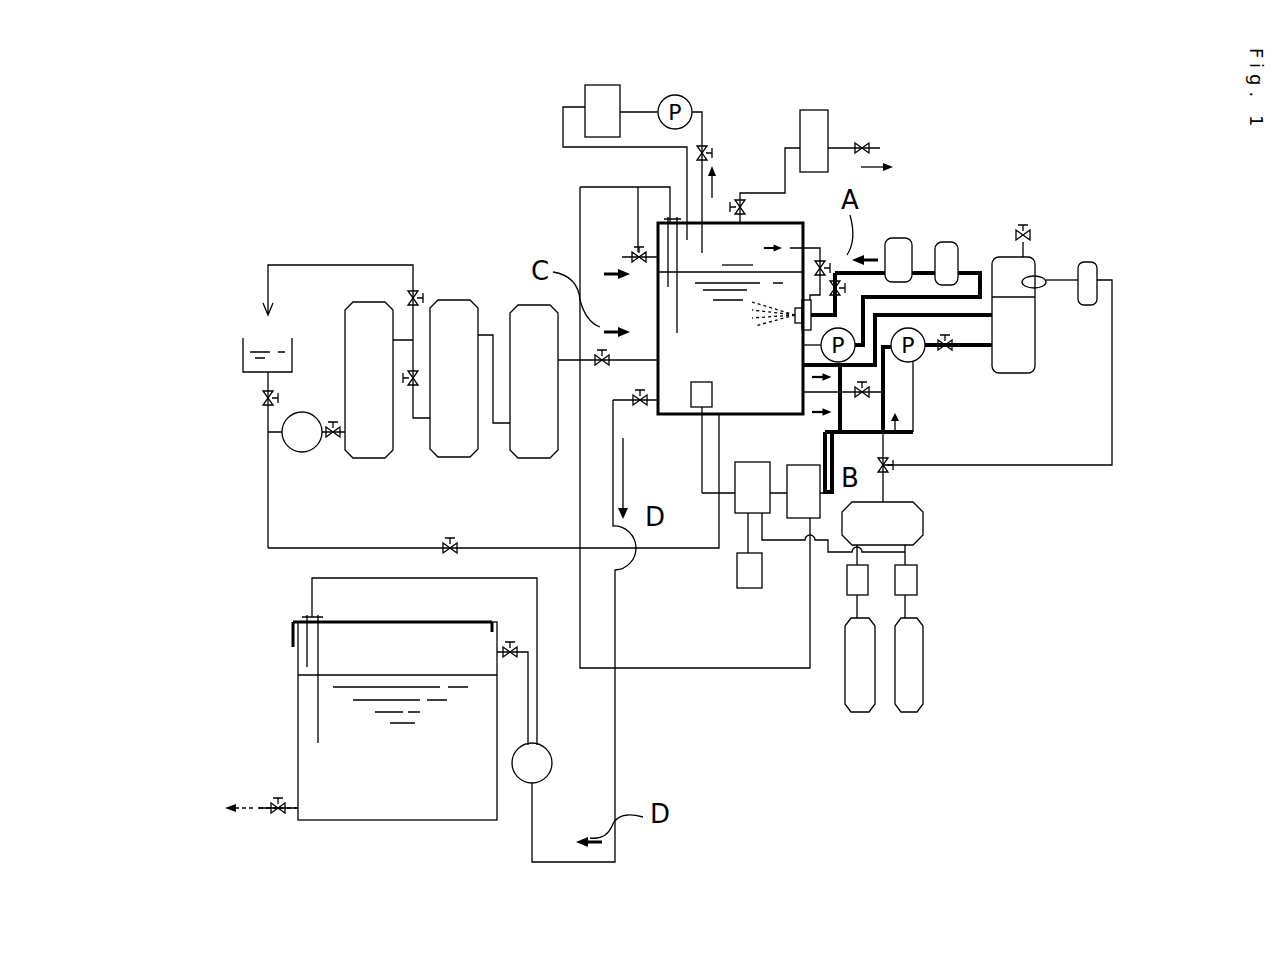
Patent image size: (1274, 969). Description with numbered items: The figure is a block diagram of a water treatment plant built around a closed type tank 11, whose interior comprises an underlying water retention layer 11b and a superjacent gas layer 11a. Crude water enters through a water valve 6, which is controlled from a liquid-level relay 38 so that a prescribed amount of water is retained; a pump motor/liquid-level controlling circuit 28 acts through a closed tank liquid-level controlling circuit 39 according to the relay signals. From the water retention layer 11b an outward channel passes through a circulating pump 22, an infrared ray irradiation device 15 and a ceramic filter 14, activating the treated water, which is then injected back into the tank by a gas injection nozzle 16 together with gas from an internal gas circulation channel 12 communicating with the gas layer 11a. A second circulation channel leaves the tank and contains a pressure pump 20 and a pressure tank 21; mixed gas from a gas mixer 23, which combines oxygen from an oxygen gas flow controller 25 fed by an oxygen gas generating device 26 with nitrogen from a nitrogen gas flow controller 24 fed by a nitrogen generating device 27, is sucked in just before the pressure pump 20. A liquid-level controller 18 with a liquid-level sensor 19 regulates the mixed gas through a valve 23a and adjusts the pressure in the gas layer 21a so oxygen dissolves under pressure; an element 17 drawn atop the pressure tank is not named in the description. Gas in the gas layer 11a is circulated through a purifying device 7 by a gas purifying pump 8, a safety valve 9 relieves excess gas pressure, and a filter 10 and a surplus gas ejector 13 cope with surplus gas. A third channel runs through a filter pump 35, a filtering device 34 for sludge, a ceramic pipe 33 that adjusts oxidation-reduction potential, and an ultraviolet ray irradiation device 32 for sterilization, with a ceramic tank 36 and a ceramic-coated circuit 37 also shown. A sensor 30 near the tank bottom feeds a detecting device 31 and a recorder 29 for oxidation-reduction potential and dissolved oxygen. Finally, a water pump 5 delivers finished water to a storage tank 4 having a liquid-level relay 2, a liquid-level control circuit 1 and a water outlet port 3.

The liquid-level control circuit 1 is at (418, 580).
The liquid-level relay 2 is at (308, 612).
The water outlet port 3 is at (267, 812).
The storage tank 4 is at (438, 820).
The water pump 5 is at (550, 775).
The water valve 6 is at (637, 255).
The purifying device 7 is at (597, 85).
The gas purifying pump 8 is at (675, 95).
The safety valve 9 is at (740, 200).
The filter 10 is at (812, 110).
The closed type tank 11 is at (690, 420).
The gas layer 11a is at (746, 249).
The water retention layer 11b is at (604, 626).
The internal gas circulation channel 12 is at (819, 260).
The surplus gas ejector 13 is at (862, 142).
The ceramic filter 14 is at (893, 240).
The infrared ray irradiation device 15 is at (945, 243).
The gas injection nozzle 16 is at (797, 328).
The valve 17 is at (1023, 228).
The liquid-level controller 18 is at (1095, 262).
The liquid-level sensor 19 is at (1045, 286).
The pressure pump 20 is at (914, 360).
The pressure tank 21 is at (1027, 373).
The gas layer 21a is at (1000, 273).
The circulating pump 22 is at (850, 358).
The gas mixer 23 is at (924, 515).
The valve 23a is at (893, 467).
The nitrogen gas flow controller 24 is at (917, 578).
The oxygen gas flow controller 25 is at (846, 578).
The oxygen gas generating device 26 is at (860, 712).
The nitrogen generating device 27 is at (918, 712).
The pump motor/liquid-level controlling circuit 28 is at (808, 465).
The oxidation-reduction potential and dissolved oxygen recorder 29 is at (750, 588).
The sensor 30 is at (702, 382).
The oxidation-reduction potential and dissolved oxygen detecting device 31 is at (755, 462).
The ultraviolet ray irradiation device 32 is at (535, 458).
The ceramic pipe 33 is at (458, 457).
The filtering device 34 is at (372, 458).
The filter pump 35 is at (302, 452).
The ceramic tank 36 is at (242, 350).
The ceramic-coated circuit 37 is at (343, 265).
The liquid-level relay 38 is at (673, 220).
The closed tank liquid-level controlling circuit 39 is at (690, 668).